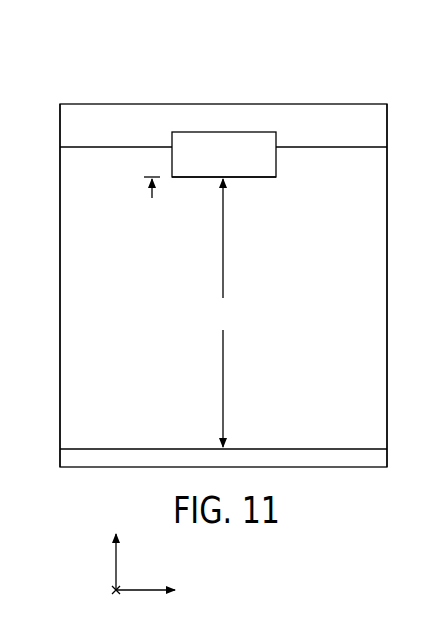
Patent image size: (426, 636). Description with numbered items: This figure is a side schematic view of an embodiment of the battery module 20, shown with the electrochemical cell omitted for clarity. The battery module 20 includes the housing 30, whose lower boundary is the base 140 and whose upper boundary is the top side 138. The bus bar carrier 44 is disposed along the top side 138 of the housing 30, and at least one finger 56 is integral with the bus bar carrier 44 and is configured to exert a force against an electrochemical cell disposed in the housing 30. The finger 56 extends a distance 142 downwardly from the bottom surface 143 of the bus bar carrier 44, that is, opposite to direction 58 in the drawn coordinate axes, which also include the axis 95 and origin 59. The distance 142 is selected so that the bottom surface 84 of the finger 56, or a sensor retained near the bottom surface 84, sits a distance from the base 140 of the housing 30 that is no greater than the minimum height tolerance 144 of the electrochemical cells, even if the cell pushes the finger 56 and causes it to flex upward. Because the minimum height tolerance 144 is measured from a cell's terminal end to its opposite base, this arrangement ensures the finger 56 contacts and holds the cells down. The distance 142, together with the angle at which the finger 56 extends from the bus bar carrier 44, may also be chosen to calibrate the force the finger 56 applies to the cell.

The battery module 20 is at (386, 80).
The housing 30 is at (387, 285).
The bus bar carrier 44 is at (304, 125).
The finger 56 is at (227, 148).
The direction 58 is at (115, 570).
The origin point 59 is at (112, 590).
The bottom surface of the finger 84 is at (253, 177).
The horizontal axis 95 is at (140, 590).
The top side of the housing 138 is at (56, 127).
The base of the housing 140 is at (322, 449).
The distance 142 is at (152, 145).
The bottom surface of the bus bar carrier 143 is at (342, 147).
The minimum height tolerance 144 is at (223, 313).